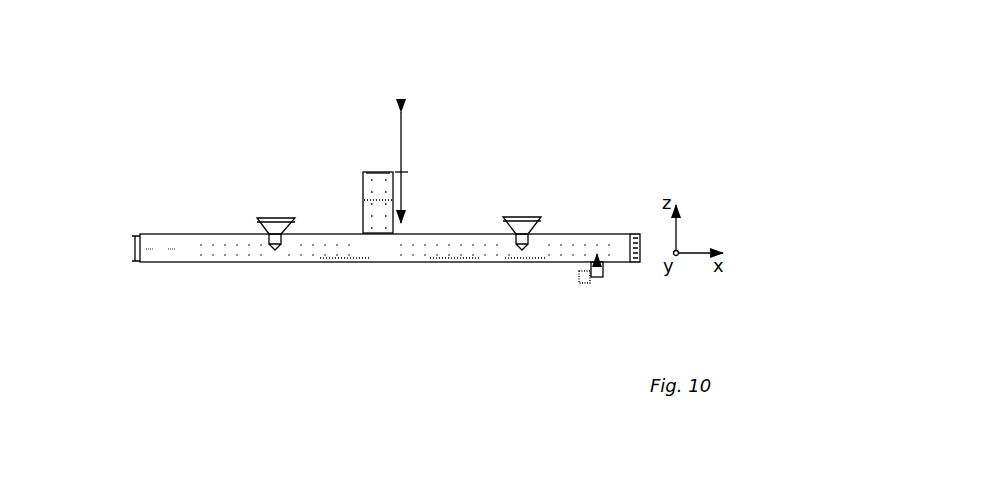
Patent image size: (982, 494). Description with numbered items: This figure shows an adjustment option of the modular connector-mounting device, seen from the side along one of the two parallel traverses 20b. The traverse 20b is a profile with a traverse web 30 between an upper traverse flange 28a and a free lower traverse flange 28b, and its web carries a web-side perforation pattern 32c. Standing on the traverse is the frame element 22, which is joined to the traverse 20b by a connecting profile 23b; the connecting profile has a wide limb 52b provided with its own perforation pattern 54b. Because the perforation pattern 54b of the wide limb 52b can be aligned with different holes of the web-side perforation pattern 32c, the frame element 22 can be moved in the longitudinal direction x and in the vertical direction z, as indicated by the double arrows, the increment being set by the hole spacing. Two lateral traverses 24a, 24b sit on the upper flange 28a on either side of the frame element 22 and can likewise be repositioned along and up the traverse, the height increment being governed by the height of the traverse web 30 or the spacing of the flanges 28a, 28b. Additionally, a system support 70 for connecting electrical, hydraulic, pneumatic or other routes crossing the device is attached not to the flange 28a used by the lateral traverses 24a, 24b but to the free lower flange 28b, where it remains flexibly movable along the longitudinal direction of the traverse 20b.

The traverse 20b is at (183, 235).
The frame element 22 is at (408, 168).
The connecting profile 23b is at (383, 170).
The lateral traverse 24a is at (268, 220).
The lateral traverse 24b is at (528, 217).
The traverse flange 28a is at (603, 233).
The traverse flange 28b is at (523, 257).
The traverse web 30 is at (452, 257).
The web-side perforation pattern 32c is at (346, 255).
The wide limb 52b is at (372, 177).
The perforation pattern 54b is at (372, 205).
The system support 70 is at (598, 280).